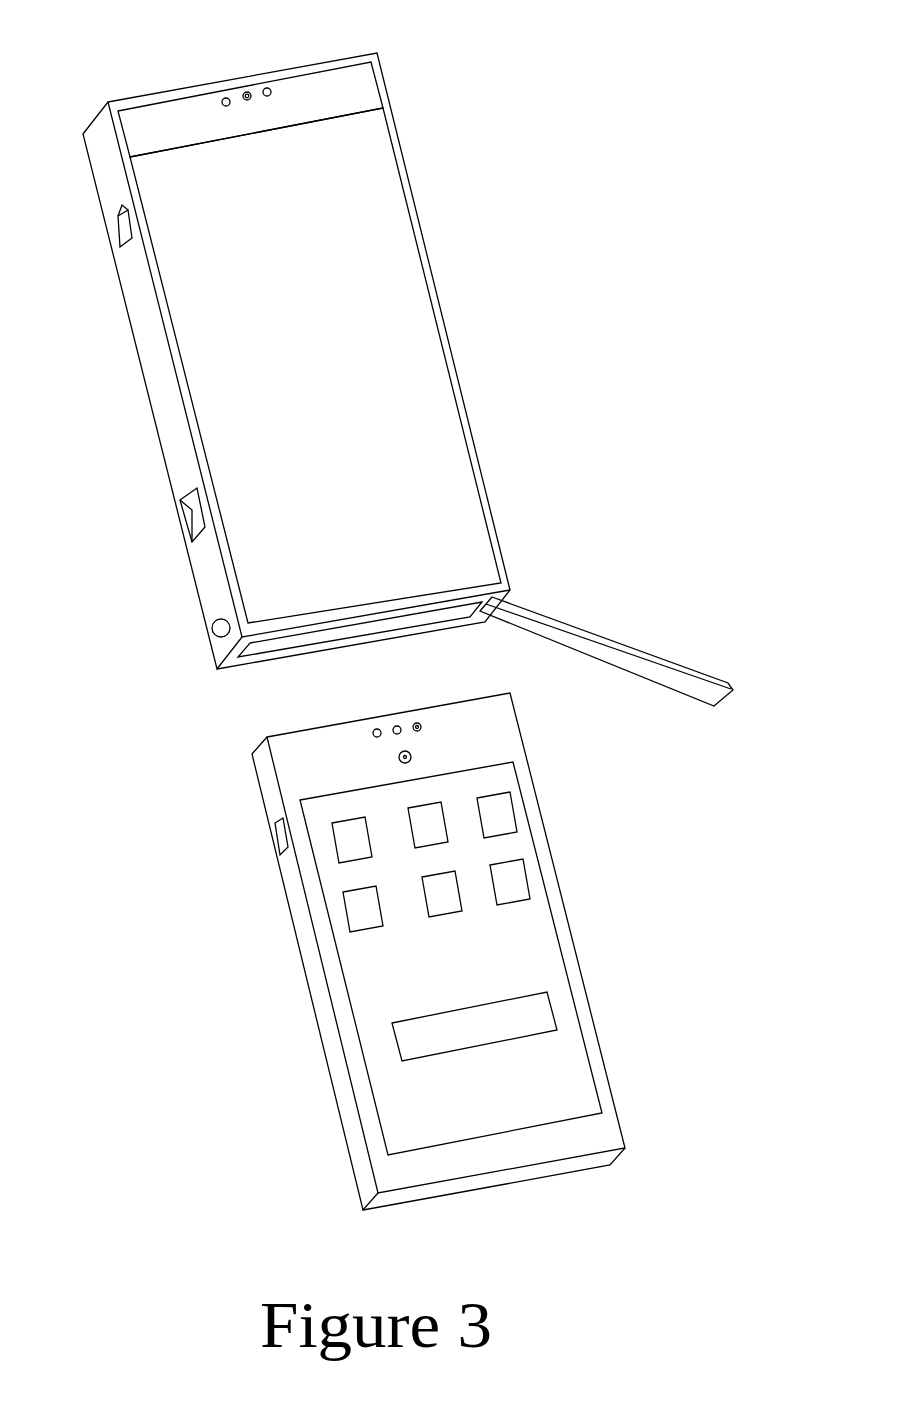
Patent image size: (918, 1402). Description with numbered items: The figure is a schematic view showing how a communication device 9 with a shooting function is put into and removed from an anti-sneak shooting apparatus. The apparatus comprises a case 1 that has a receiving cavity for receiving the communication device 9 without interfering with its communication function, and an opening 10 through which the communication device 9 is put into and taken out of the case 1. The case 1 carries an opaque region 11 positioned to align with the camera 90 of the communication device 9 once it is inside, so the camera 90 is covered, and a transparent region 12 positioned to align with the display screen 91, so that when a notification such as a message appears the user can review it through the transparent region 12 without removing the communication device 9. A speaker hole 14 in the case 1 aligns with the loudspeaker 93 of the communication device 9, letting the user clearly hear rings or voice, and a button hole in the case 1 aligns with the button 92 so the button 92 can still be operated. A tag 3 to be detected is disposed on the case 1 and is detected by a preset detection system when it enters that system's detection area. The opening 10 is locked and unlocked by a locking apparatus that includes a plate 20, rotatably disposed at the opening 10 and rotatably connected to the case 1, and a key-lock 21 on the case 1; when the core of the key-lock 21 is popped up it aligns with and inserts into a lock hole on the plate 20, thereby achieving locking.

The case 1 is at (158, 378).
The tag to be detected 3 is at (192, 518).
The communication device 9 is at (297, 787).
The opening 10 is at (120, 228).
The opaque region 11 is at (172, 126).
The transparent region 12 is at (383, 253).
The speaker hole 14 is at (246, 92).
The plate 20 is at (590, 640).
The key-lock 21 is at (212, 626).
The camera 90 is at (412, 757).
The display screen 91 is at (520, 932).
The button 92 is at (277, 840).
The loudspeaker 93 is at (422, 727).